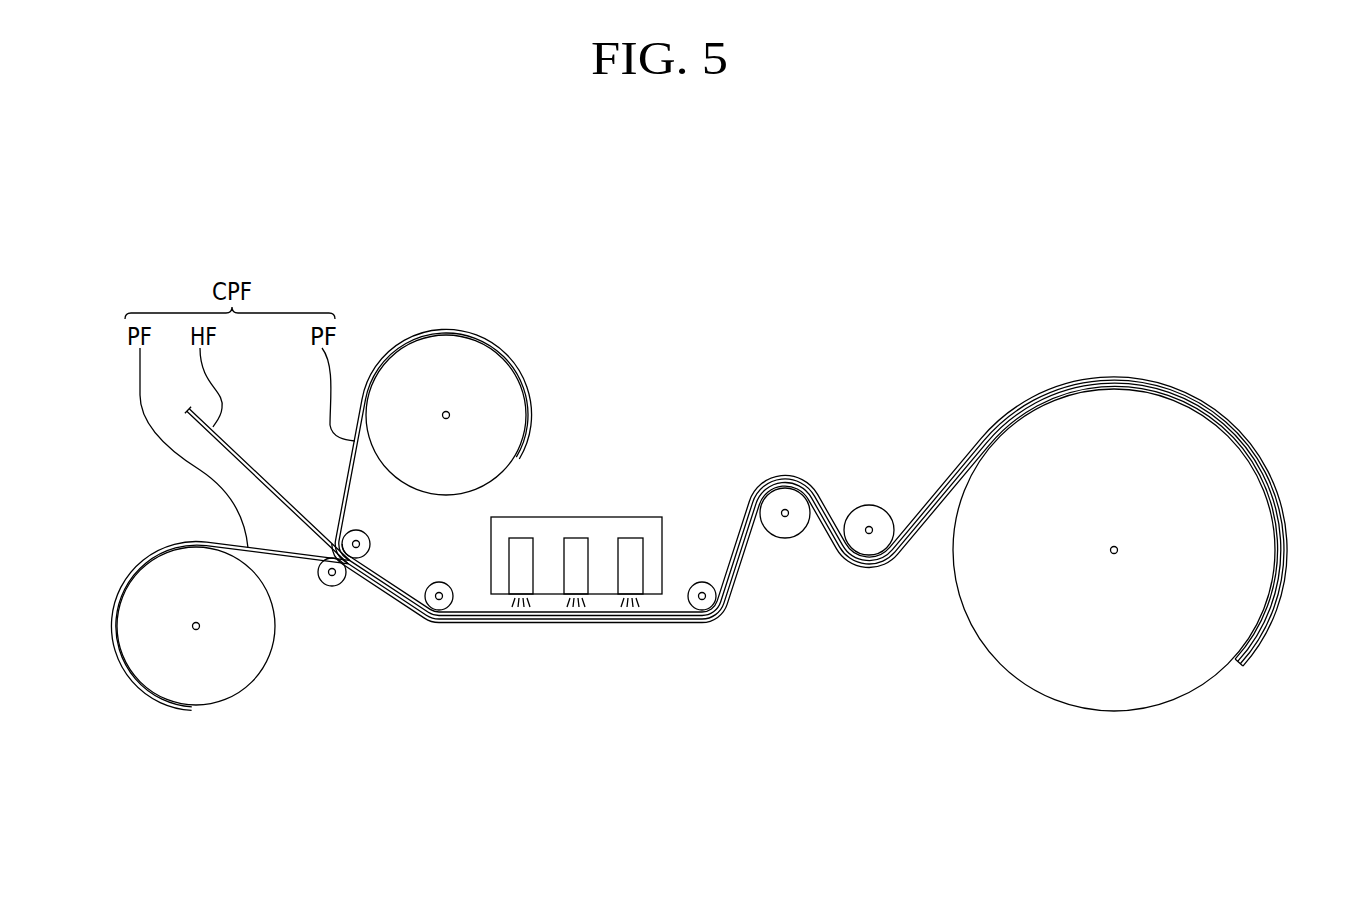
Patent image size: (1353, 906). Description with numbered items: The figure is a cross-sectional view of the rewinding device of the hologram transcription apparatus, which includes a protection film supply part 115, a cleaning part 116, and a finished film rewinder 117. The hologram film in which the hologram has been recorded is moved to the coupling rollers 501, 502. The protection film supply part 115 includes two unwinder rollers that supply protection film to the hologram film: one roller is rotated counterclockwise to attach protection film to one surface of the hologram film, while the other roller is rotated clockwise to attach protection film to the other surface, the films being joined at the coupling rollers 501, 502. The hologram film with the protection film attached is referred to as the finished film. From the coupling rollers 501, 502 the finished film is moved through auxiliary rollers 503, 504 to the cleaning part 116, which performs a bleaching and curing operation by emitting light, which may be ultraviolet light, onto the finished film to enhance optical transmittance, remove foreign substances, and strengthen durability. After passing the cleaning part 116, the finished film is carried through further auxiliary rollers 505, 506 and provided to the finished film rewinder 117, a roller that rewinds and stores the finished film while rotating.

The protection film supply part 115 is at (232, 661).
The cleaning part 116 is at (615, 509).
The finished film rewinder 117 is at (1107, 685).
The coupling roller 501 is at (323, 574).
The coupling roller 502 is at (361, 530).
The guide roller 503 is at (431, 575).
The guide roller 504 is at (694, 575).
The guide roller 505 is at (777, 520).
The guide roller 506 is at (862, 509).